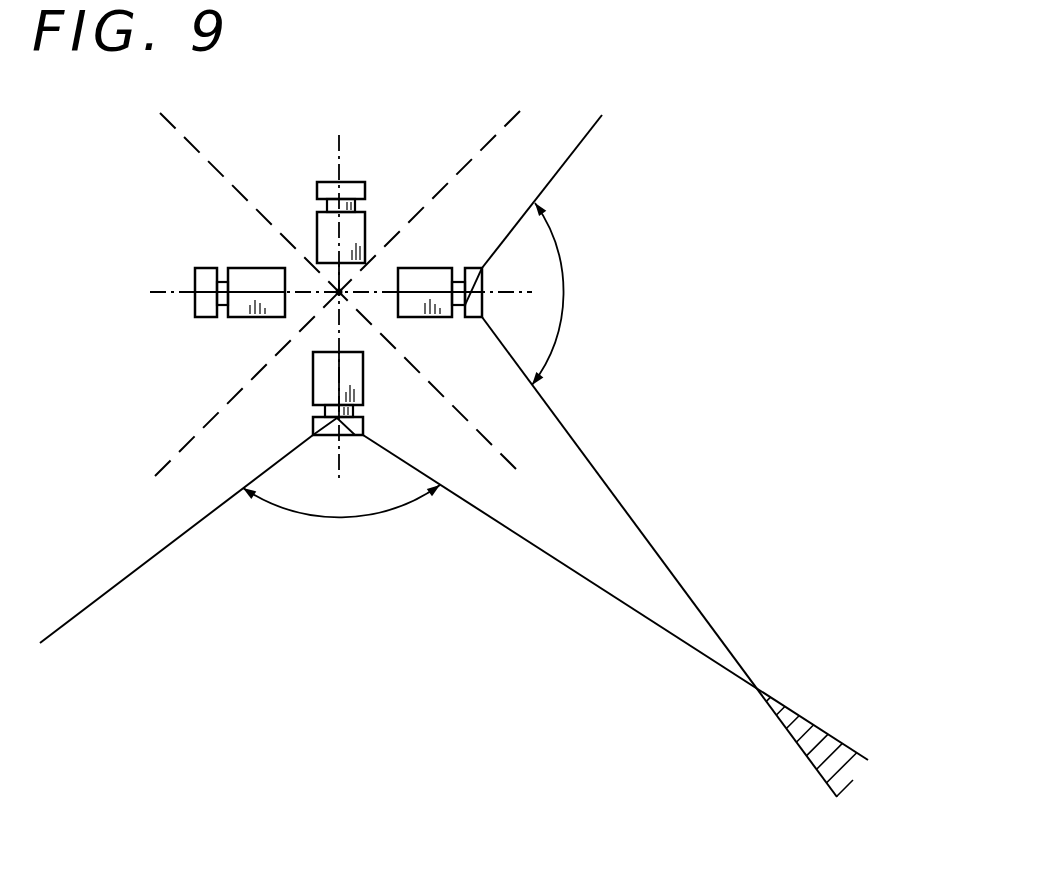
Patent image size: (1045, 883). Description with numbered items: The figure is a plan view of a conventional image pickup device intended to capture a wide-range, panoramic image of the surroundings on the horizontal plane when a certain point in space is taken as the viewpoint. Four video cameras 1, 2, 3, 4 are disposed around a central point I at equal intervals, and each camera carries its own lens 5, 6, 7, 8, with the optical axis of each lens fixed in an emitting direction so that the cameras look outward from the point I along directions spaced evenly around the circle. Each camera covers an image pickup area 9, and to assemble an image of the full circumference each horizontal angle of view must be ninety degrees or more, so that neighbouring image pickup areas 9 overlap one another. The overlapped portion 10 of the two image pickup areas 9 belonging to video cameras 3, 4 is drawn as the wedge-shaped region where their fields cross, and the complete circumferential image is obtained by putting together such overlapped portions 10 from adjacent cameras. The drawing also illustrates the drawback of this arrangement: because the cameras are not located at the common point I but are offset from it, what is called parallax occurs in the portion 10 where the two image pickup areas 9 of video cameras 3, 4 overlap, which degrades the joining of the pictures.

The video camera 1 is at (245, 282).
The video camera 2 is at (357, 233).
The video camera 3 is at (423, 280).
The video camera 4 is at (353, 378).
The lens 5 is at (207, 282).
The lens 6 is at (360, 188).
The lens 7 is at (472, 273).
The lens 8 is at (363, 422).
The image pickup area 9 is at (565, 285).
The overlapped portion 10 is at (798, 725).
The point I is at (347, 297).